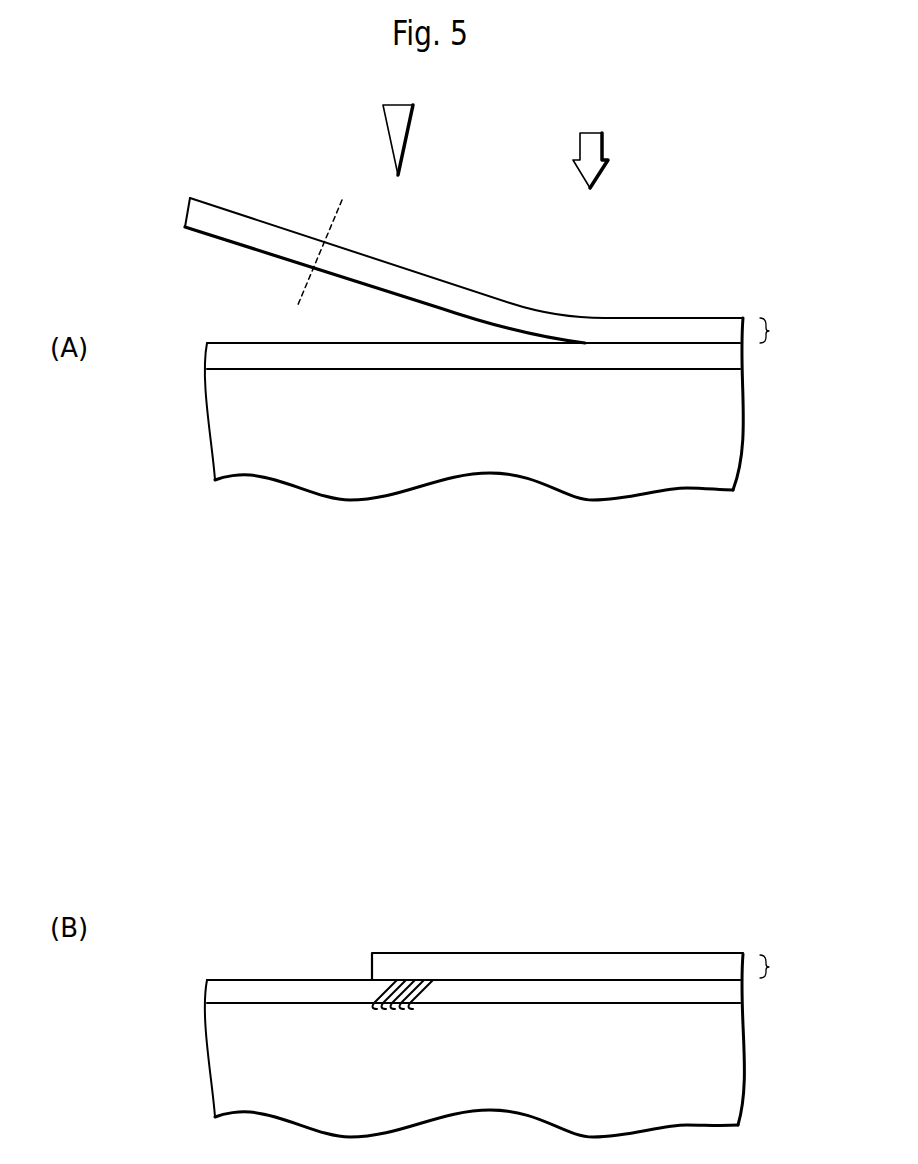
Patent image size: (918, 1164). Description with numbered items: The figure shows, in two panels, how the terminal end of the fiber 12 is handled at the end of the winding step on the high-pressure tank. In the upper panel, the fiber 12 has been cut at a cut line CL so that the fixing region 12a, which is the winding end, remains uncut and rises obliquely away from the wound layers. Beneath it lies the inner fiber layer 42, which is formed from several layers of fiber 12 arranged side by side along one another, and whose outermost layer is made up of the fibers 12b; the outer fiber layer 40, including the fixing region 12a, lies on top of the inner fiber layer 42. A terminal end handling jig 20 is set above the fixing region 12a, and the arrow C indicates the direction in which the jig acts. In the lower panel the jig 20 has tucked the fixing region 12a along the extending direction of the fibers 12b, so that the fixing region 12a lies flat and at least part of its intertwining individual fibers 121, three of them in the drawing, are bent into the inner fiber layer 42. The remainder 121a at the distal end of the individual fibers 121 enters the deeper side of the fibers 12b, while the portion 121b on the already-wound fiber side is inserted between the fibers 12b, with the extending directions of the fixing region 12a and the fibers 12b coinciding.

The fiber 12 is at (241, 230).
The fixing region 12a is at (352, 253).
The fibers forming the outermost layer 12b is at (730, 362).
The terminal end handling jig 20 is at (413, 113).
The outer fiber layer 40 is at (782, 650).
The inner fiber layer 42 is at (730, 422).
The individual fibers 121 is at (376, 1006).
The remainder 121a is at (375, 1003).
The portion 121b is at (377, 996).
The cut line CL is at (329, 239).
The pressing direction C is at (605, 160).